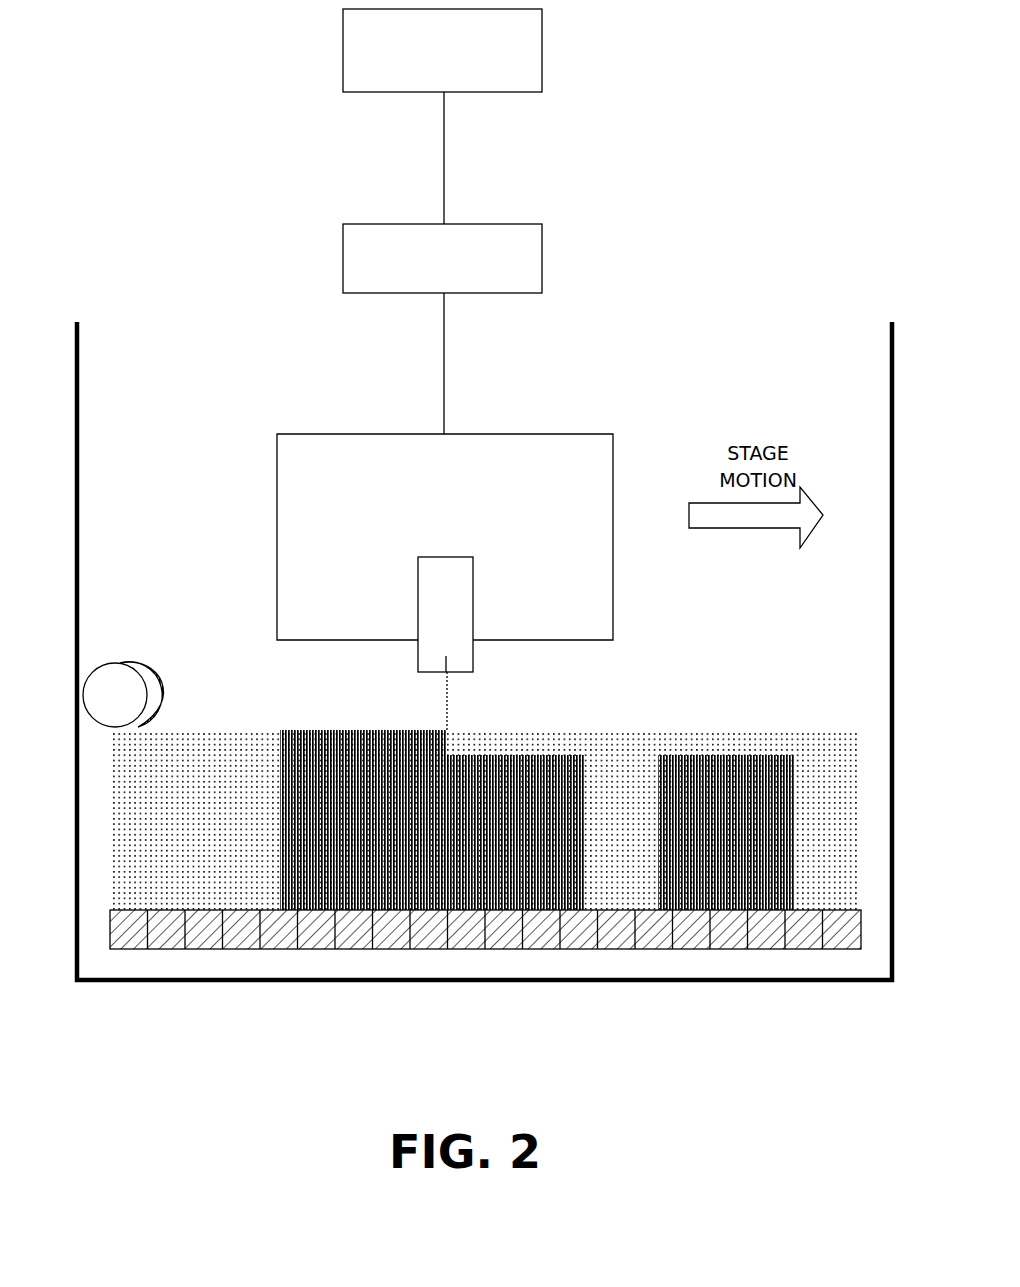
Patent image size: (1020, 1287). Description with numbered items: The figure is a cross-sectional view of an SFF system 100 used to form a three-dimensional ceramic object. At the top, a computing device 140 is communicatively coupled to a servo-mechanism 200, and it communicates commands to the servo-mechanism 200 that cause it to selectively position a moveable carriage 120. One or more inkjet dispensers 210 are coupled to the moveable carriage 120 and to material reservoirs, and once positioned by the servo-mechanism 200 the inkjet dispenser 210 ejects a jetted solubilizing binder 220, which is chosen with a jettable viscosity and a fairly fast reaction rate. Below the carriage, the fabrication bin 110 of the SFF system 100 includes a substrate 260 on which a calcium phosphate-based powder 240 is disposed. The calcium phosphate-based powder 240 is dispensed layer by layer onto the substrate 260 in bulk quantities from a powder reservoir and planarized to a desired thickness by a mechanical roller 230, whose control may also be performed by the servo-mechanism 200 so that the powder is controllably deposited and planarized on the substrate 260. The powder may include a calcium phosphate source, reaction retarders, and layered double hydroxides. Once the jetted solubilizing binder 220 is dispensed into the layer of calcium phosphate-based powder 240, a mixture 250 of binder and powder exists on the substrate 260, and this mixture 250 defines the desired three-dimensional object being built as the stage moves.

The SFF system 100 is at (771, 160).
The fabrication bin 110 is at (120, 312).
The moveable carriage 120 is at (445, 537).
The computing device 140 is at (542, 50).
The servo-mechanism 200 is at (542, 257).
The inkjet dispenser 210 is at (478, 588).
The jetted solubilizing binder 220 is at (452, 703).
The mechanical roller 230 is at (127, 682).
The calcium phosphate-based powder 240 is at (193, 728).
The mixture 250 is at (320, 728).
The substrate 260 is at (612, 972).